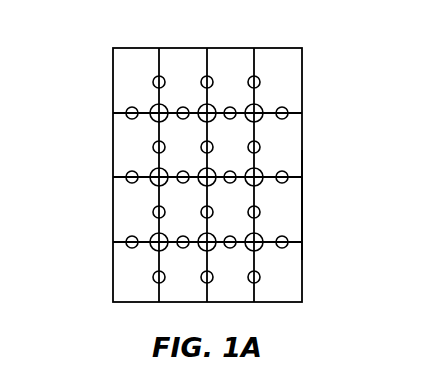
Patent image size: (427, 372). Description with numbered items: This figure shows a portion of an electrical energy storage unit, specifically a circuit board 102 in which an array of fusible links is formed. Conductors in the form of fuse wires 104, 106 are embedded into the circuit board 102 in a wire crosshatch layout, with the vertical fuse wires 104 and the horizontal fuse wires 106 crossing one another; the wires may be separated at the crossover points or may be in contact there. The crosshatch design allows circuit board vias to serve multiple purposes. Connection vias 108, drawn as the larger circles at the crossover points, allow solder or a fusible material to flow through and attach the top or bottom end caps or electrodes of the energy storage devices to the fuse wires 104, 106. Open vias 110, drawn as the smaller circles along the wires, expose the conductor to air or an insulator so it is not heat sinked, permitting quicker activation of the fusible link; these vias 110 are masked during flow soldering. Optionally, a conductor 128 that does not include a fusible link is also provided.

The circuit board 102 is at (280, 72).
The fuse wire 104 is at (158, 62).
The fuse wire 106 is at (291, 114).
The connection via 108 is at (153, 120).
The open via 110 is at (153, 82).
The conductor 128 is at (302, 207).